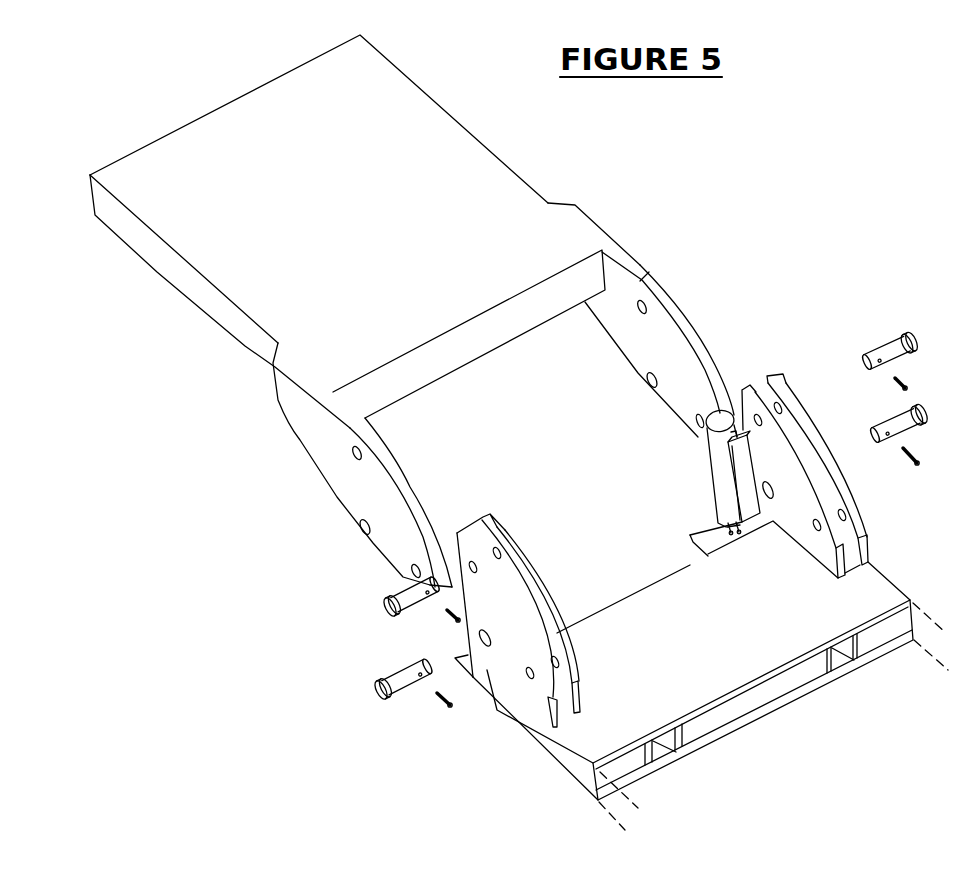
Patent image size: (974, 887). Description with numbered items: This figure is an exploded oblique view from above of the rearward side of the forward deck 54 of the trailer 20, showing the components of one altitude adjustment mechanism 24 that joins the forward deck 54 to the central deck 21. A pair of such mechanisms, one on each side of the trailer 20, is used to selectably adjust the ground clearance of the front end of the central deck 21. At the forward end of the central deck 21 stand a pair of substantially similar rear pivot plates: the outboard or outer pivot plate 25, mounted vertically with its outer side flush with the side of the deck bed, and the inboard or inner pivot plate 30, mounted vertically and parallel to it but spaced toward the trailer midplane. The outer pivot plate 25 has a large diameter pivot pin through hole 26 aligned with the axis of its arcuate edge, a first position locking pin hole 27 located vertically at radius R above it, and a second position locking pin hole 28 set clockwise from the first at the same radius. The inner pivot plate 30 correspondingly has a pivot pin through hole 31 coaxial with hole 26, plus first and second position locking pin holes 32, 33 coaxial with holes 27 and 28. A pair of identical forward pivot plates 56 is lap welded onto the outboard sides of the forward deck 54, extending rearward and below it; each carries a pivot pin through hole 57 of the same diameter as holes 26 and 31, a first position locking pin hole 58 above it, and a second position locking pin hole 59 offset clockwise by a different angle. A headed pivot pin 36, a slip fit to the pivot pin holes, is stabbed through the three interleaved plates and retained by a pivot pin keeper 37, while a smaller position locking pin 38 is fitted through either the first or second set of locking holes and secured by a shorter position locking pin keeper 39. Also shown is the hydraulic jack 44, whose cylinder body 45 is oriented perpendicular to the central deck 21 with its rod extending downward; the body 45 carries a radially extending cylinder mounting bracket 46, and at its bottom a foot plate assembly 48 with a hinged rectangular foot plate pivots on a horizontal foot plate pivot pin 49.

The trailer 20 is at (157, 139).
The central deck 21 is at (880, 572).
The altitude adjustment mechanism 24 is at (713, 211).
The outer pivot plate 25 is at (458, 533).
The pivot pin through hole 26 is at (484, 631).
The first position locking pin hole 27 is at (394, 441).
The second position locking pin hole 28 is at (529, 677).
The inner pivot plate 30 is at (540, 577).
The pivot pin through hole 31 is at (776, 491).
The first position locking pin hole 32 is at (496, 548).
The second position locking pin hole 33 is at (555, 657).
The pivot pin 36 is at (373, 695).
The pivot pin keeper 37 is at (437, 698).
The position locking pin 38 is at (386, 608).
The position locking pin keeper 39 is at (447, 618).
The hydraulic jack 44 is at (727, 470).
The cylinder body 45 is at (709, 447).
The cylinder mounting bracket 46 is at (757, 465).
The foot plate assembly 48 is at (711, 533).
The foot plate pivot pin 49 is at (729, 530).
The forward deck 54 is at (500, 157).
The forward pivot plate 56 is at (300, 438).
The pivot pin through hole 57 is at (362, 531).
The first position locking pin hole 58 is at (353, 458).
The second position locking pin hole 59 is at (412, 578).